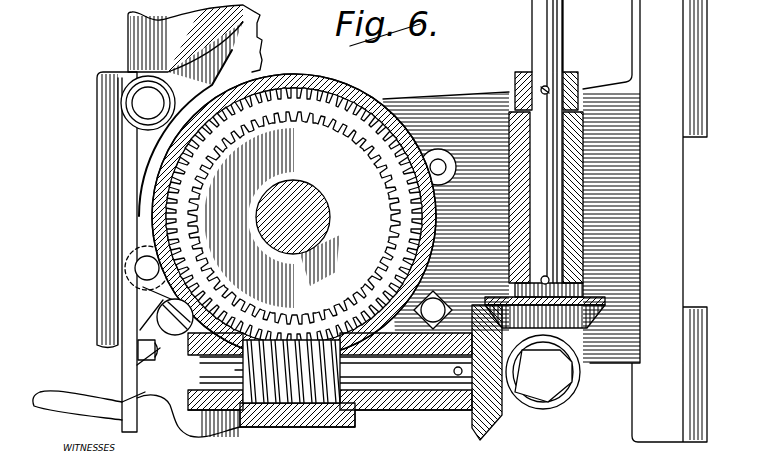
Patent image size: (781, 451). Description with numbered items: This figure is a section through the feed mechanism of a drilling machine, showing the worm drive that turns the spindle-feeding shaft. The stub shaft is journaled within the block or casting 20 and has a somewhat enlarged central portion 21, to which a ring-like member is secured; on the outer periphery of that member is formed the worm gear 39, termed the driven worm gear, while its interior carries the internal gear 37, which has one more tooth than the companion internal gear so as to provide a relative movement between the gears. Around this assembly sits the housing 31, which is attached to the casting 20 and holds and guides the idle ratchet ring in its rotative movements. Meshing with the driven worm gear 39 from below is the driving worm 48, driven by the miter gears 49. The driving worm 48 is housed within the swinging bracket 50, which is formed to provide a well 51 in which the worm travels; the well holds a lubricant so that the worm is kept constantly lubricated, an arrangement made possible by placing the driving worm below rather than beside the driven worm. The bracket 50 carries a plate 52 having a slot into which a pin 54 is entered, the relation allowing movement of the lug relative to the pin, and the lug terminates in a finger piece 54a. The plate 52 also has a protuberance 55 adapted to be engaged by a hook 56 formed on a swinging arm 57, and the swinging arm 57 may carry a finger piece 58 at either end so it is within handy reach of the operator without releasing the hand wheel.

The block or casting 20 is at (545, 221).
The enlarged central portion 21 is at (316, 202).
The housing 31 is at (328, 76).
The internal gear 37 is at (393, 201).
The worm gear 39 is at (410, 233).
The driving worm 48 is at (322, 405).
The miter gears 49 is at (555, 333).
The swinging bracket 50 is at (410, 412).
The well 51 is at (296, 400).
The plate 52 is at (188, 392).
The pin 54 is at (179, 334).
The finger piece 54a is at (75, 410).
The protuberance 55 is at (138, 350).
The hook 56 is at (140, 366).
The swinging arm 57 is at (130, 140).
The finger piece 58 is at (258, 23).